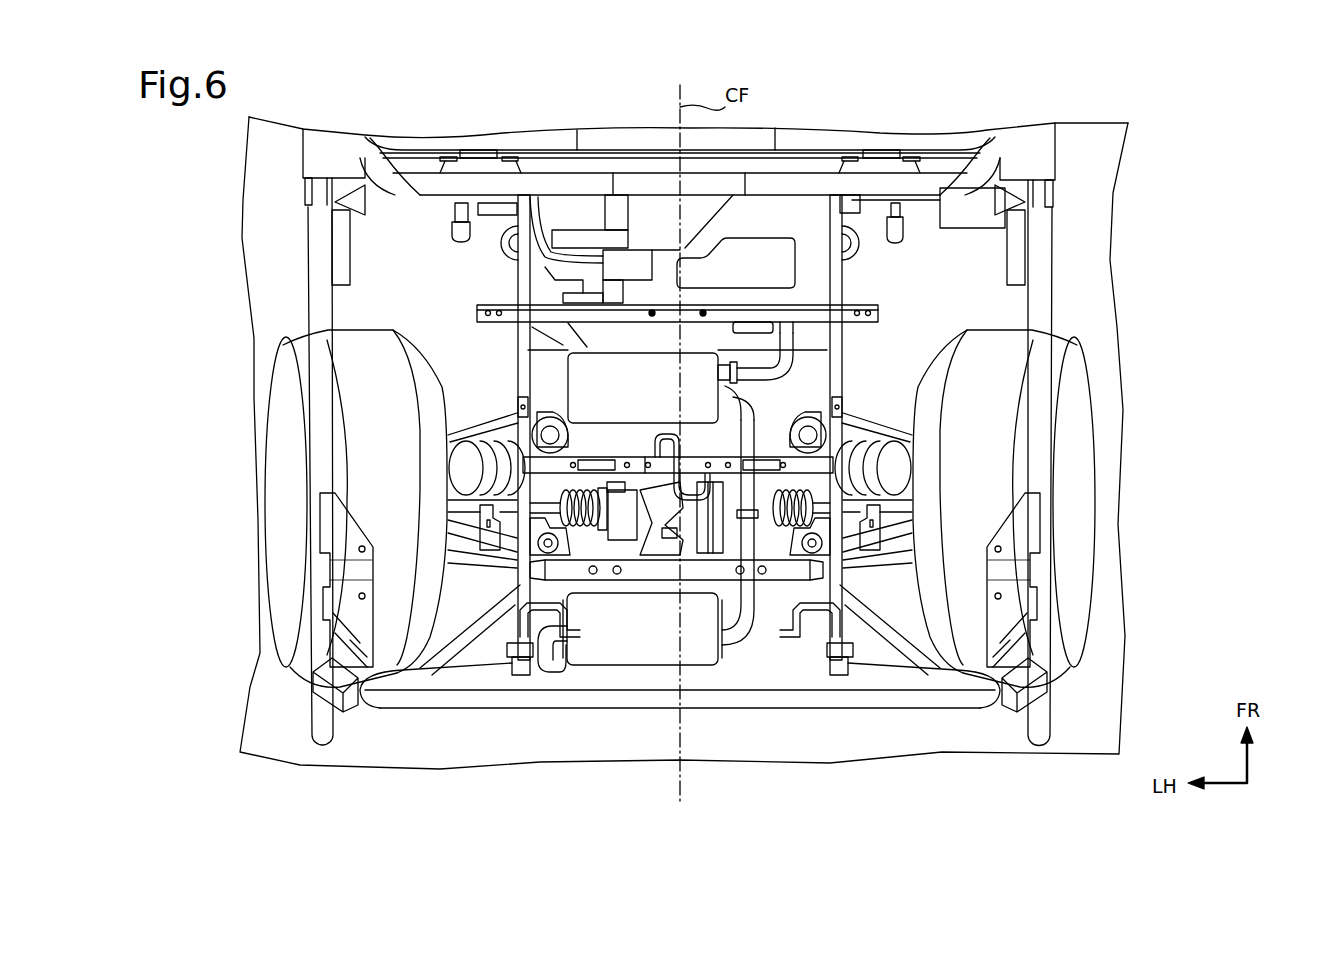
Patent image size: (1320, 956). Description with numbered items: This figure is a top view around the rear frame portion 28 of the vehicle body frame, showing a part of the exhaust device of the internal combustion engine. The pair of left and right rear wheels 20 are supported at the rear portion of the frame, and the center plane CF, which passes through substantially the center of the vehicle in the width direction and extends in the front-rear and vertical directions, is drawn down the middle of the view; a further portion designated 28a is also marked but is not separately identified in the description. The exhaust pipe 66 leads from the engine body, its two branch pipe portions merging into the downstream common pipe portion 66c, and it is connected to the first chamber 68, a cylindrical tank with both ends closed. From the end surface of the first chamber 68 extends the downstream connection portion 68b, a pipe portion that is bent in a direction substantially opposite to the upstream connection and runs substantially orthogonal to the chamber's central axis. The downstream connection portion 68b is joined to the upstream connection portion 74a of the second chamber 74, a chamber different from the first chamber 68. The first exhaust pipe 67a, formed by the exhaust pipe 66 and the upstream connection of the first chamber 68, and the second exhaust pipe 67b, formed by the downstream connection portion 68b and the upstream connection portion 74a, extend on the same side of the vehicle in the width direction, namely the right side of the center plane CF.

The rear wheels 20 is at (283, 595).
The rear frame portion 28 is at (700, 683).
The cross member right portion 28a is at (773, 573).
The exhaust pipe 66 is at (797, 333).
The downstream common pipe portion 66c is at (787, 358).
The first exhaust pipe 67a is at (793, 343).
The second exhaust pipe 67b is at (752, 623).
The first chamber 68 is at (590, 380).
The downstream connection portion 68b is at (743, 413).
The second chamber 74 is at (627, 648).
The upstream connection portion 74a is at (745, 643).